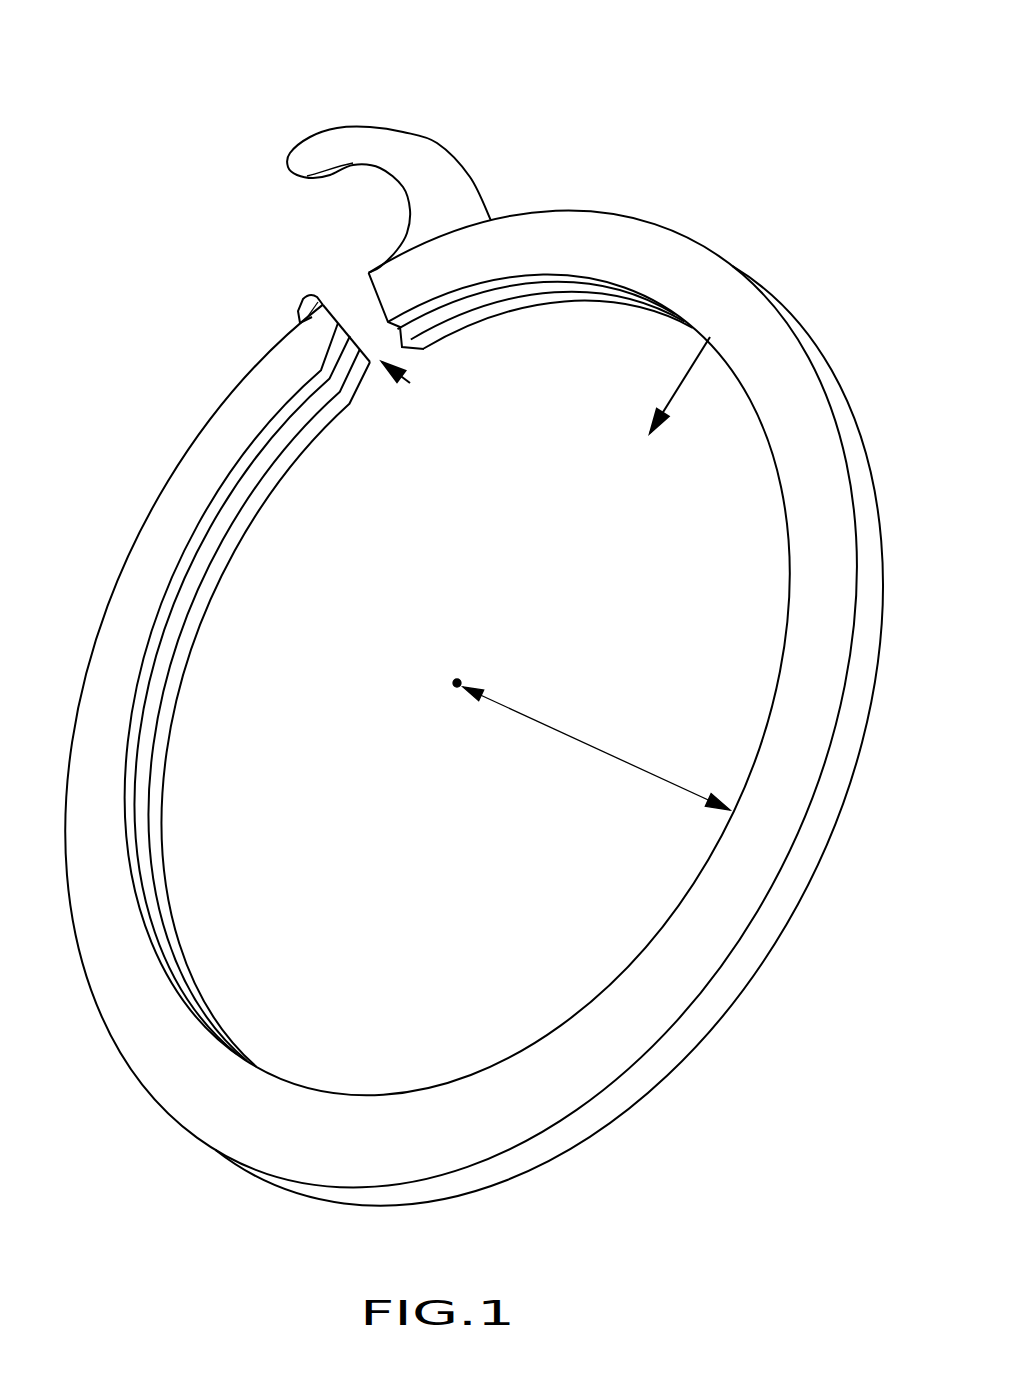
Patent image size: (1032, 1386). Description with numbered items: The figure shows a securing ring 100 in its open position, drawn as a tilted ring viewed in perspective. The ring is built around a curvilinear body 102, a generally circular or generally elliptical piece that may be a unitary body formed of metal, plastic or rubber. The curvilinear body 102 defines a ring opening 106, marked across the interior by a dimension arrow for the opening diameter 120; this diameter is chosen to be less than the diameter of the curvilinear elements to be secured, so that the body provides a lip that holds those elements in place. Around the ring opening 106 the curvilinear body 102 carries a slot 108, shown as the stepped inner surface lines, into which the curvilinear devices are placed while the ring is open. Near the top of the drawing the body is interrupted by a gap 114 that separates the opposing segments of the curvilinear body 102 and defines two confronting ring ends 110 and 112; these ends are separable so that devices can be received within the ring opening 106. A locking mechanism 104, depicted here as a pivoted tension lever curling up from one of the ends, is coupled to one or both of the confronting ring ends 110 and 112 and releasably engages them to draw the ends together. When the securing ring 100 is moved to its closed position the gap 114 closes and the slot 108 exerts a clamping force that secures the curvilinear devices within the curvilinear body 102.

The securing ring 100 is at (474, 607).
The curvilinear body 102 is at (743, 983).
The locking mechanism 104 is at (350, 125).
The ring opening 106 is at (710, 337).
The slot 108 is at (160, 655).
The confronting ring end 110 is at (366, 360).
The confronting ring end 112 is at (394, 345).
The gap 114 is at (410, 383).
The opening diameter 120 is at (583, 740).